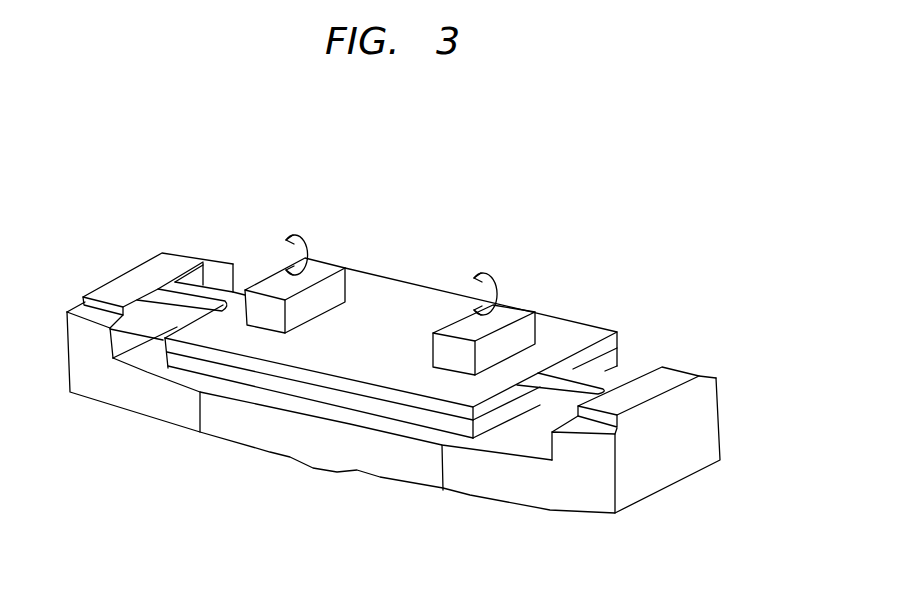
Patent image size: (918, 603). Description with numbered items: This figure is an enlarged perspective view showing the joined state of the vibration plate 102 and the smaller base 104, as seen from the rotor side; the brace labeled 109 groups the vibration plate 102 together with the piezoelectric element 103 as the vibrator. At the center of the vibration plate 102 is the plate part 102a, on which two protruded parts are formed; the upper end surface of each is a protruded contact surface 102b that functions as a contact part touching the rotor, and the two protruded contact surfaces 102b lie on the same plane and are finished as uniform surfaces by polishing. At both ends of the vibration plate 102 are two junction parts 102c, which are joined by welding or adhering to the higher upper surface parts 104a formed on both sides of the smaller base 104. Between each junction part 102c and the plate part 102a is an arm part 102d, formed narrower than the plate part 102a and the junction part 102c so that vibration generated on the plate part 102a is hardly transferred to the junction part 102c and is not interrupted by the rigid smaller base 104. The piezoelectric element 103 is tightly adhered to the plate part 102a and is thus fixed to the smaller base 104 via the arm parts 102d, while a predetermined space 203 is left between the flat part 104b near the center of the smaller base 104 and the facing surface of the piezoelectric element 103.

The vibration plate 102 is at (187, 164).
The plate part 102a is at (422, 289).
The protruded contact surface 102b is at (340, 263).
The junction part 102c is at (170, 262).
The arm part 102d is at (207, 285).
The piezoelectric element 103 is at (487, 427).
The smaller base 104 is at (380, 452).
The higher upper surface part 104a is at (97, 313).
The flat part 104b is at (150, 358).
The vibrator assembly 109 is at (713, 116).
The space 203 is at (267, 398).